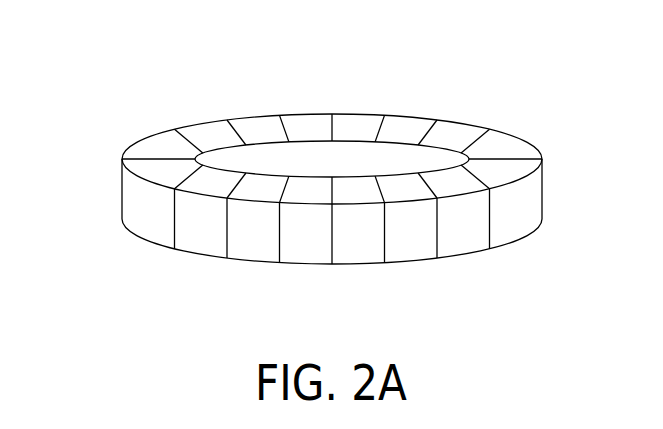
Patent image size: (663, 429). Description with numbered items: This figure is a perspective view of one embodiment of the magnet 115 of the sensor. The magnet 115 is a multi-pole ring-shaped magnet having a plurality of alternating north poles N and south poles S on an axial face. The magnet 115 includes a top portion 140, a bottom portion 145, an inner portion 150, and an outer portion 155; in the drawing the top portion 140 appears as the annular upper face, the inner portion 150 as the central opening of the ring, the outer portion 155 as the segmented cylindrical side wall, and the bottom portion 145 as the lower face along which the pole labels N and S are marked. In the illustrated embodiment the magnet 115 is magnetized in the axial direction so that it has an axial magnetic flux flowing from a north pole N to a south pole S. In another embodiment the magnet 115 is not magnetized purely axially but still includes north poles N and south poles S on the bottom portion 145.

The magnet 115 is at (129, 102).
The top portion 140 is at (499, 113).
The inner portion 150 is at (267, 156).
The outer portion 155 is at (137, 203).
The bottom portion 145 is at (487, 269).